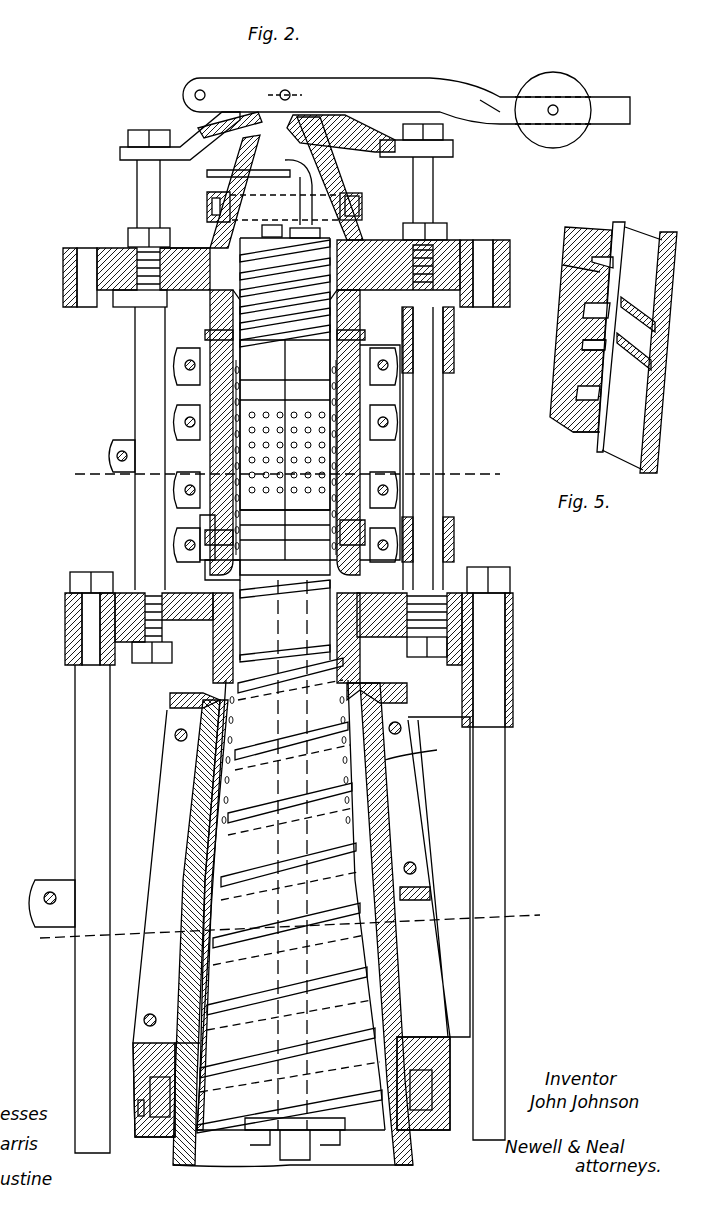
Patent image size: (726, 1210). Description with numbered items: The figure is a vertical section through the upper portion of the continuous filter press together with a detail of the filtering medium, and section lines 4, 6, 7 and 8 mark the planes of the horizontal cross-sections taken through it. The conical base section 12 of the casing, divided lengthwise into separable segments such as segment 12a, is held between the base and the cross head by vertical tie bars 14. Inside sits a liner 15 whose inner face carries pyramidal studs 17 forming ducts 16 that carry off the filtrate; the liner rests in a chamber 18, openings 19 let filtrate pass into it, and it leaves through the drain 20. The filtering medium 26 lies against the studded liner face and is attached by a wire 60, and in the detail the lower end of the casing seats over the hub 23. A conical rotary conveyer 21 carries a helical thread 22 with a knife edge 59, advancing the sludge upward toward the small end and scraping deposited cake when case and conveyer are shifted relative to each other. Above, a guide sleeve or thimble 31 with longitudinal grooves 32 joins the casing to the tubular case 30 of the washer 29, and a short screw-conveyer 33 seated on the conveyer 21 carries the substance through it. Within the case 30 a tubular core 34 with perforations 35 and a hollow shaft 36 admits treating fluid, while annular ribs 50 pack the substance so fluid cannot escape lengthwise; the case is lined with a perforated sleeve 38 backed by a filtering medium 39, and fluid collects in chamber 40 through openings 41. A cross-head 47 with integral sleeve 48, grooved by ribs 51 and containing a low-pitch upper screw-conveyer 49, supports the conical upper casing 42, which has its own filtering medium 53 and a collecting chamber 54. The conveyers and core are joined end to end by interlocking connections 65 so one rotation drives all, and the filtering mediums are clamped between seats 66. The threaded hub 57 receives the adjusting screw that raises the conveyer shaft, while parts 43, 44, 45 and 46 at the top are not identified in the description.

In FIG. 2, the section line 4—4— 4 is at (285, 863).
In FIG. 2, the section line 6— 6 is at (210, 306).
In FIG. 2, the section line 7— 7 is at (210, 660).
In FIG. 2, the section line 8— 8 is at (289, 472).
In FIG. 2, the base section of casing 12 is at (392, 812).
In FIG. 2, the casing segment 12a is at (392, 780).
In FIG. 2, the vertical tie bars 14 is at (75, 808).
In FIG. 2, the liner 15 is at (385, 765).
In FIG. 5, the liner 15 is at (583, 227).
In FIG. 2, the ducts 16 is at (385, 842).
In FIG. 5, the ducts 16 is at (590, 346).
In FIG. 2, the pyramidal projections or studs 17 is at (430, 892).
In FIG. 5, the pyramidal projections or studs 17 is at (590, 440).
In FIG. 2, the chamber 18 is at (432, 1082).
In FIG. 2, the openings 19 is at (160, 1085).
In FIG. 2, the outlet or drain 20 is at (138, 1108).
In FIG. 2, the rotary conveyer 21 is at (293, 1050).
In FIG. 5, the rotary conveyer 21 is at (650, 430).
In FIG. 2, the worm or thread 22 is at (289, 895).
In FIG. 5, the worm or thread 22 is at (640, 358).
In FIG. 2, the hub 23 is at (195, 735).
In FIG. 2, the filtering medium 26 is at (212, 820).
In FIG. 2, the washer 29 is at (418, 448).
In FIG. 2, the tubular case 30 is at (210, 393).
In FIG. 2, the guide sleeve or thimble 31 is at (209, 573).
In FIG. 2, the longitudinal corrugations or grooves 32 is at (285, 654).
In FIG. 2, the short screw-conveyer section 33 is at (285, 620).
In FIG. 2, the core 34 is at (315, 410).
In FIG. 2, the perforations 35 is at (330, 440).
In FIG. 2, the hollow shaft 36 is at (400, 492).
In FIG. 2, the liner 38 is at (235, 408).
In FIG. 2, the filtering medium 39 is at (185, 470).
In FIG. 2, the chamber 40 is at (365, 530).
In FIG. 2, the openings 41 is at (200, 530).
In FIG. 2, the upper casing 42 is at (325, 172).
In FIG. 2, the strut 43 is at (318, 117).
In FIG. 2, the lever 44 is at (300, 95).
In FIG. 2, the lever arm 45 is at (491, 93).
In FIG. 2, the weight disc 46 is at (560, 95).
In FIG. 2, the cross-head 47 is at (383, 255).
In FIG. 2, the sleeve 48 is at (190, 250).
In FIG. 2, the upper screw-conveyer 49 is at (302, 240).
In FIG. 2, the corrugations or annular ribs 50 is at (215, 348).
In FIG. 2, the longitudinal grooves or ribs 51 is at (205, 290).
In FIG. 2, the filtering medium 53 is at (296, 184).
In FIG. 2, the collecting chamber 54 is at (360, 200).
In FIG. 2, the threaded hub 57 is at (235, 174).
In FIG. 5, the knife edge 59 is at (638, 303).
In FIG. 5, the fastening or wire 60 is at (565, 278).
In FIG. 2, the interlocking connections 65 is at (285, 736).
In FIG. 2, the seats 66 is at (355, 333).